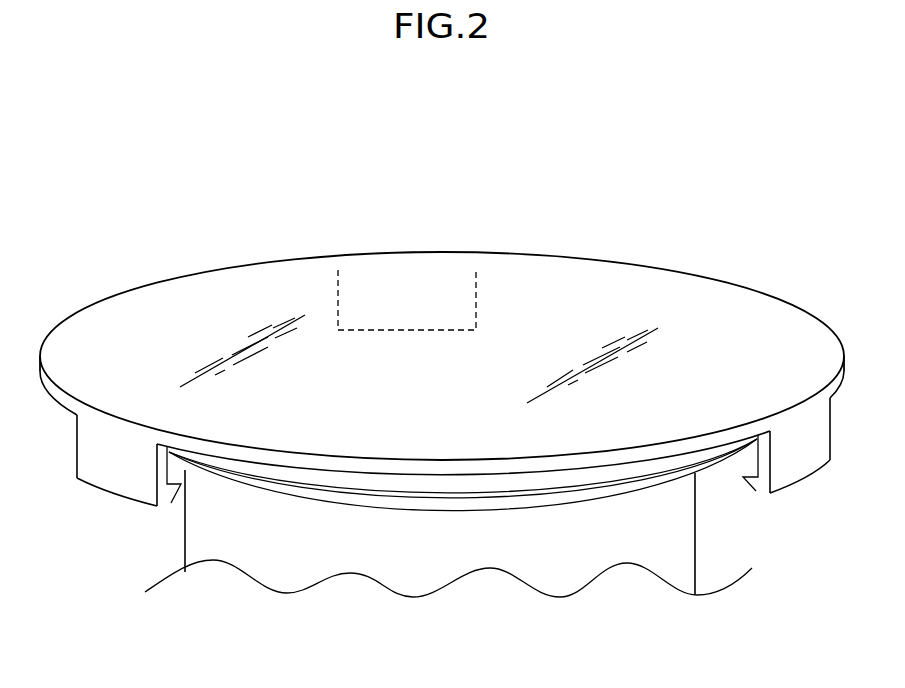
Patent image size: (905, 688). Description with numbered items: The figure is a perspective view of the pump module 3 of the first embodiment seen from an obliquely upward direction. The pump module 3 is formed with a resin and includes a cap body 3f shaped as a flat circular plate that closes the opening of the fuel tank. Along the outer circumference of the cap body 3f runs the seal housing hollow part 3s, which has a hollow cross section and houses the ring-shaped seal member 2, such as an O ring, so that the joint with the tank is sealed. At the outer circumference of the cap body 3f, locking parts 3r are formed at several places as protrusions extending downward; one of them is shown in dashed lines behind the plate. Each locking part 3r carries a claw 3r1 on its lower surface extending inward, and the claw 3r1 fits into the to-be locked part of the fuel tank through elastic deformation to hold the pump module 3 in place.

The seal member 2 is at (525, 480).
The pump module 3 is at (640, 250).
The cap body 3f is at (488, 360).
The locking part 3r is at (338, 295).
The claw 3r1 is at (167, 487).
The seal housing hollow part 3s is at (422, 483).